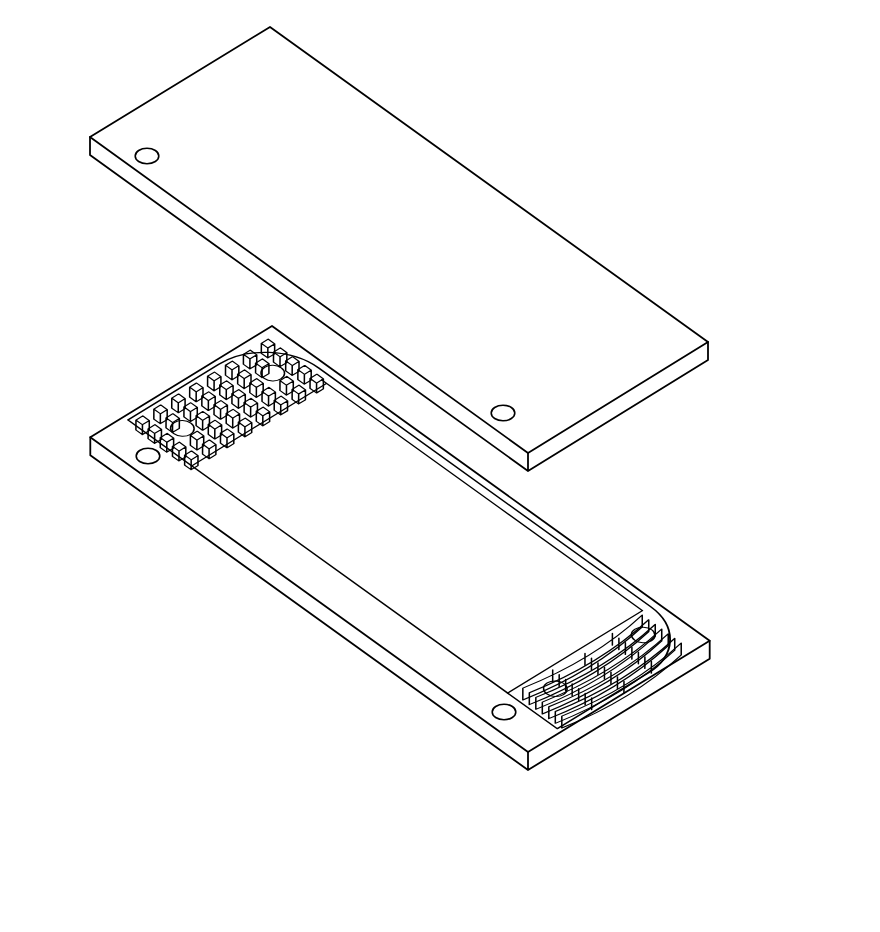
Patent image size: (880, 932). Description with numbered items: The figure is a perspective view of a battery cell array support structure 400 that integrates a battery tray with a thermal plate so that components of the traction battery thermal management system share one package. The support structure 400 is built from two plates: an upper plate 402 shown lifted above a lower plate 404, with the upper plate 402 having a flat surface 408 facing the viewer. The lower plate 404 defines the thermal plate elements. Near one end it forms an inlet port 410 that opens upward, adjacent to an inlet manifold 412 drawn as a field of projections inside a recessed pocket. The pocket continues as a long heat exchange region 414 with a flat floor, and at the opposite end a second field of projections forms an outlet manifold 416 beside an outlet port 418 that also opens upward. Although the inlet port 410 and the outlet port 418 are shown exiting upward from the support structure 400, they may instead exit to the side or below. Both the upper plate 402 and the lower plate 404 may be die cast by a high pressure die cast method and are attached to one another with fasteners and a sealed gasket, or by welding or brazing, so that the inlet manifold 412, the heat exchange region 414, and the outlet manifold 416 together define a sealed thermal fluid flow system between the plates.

The battery support structure 400 is at (115, 82).
The upper plate 402 is at (720, 348).
The lower plate 404 is at (721, 650).
The planar surface of cover plate 408 is at (442, 177).
The inlet port 410 is at (147, 156).
The inlet manifold 412 is at (183, 418).
The heat exchange region 414 is at (547, 565).
The outlet manifold 416 is at (653, 633).
The outlet port 418 is at (503, 413).